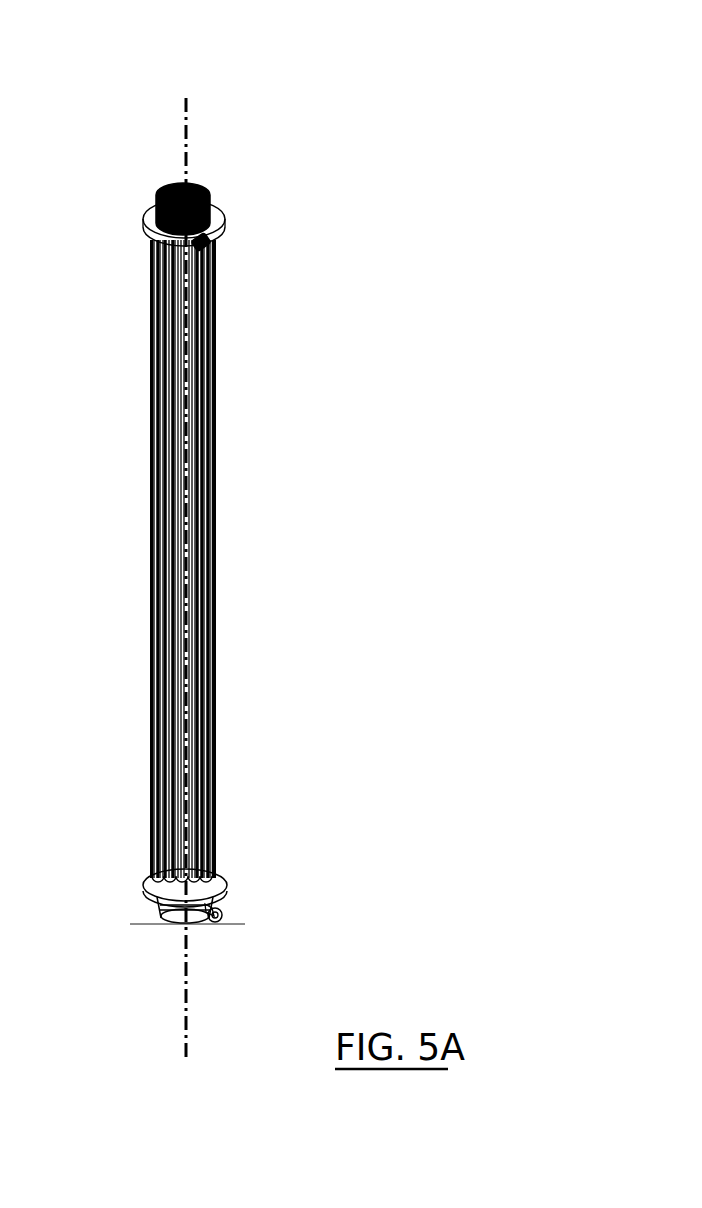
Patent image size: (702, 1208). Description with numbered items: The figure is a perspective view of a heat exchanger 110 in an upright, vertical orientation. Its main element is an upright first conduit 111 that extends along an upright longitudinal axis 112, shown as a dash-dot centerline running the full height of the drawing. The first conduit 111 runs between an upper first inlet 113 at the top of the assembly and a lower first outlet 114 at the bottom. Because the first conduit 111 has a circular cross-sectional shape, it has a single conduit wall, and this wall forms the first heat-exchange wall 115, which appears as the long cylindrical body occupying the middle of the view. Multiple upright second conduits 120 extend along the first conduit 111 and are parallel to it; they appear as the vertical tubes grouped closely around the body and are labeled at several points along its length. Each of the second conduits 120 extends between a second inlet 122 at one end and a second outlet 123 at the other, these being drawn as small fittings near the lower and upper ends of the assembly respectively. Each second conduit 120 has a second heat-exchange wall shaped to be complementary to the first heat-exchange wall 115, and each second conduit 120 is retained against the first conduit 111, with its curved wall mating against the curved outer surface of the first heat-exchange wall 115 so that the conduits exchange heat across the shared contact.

The heat exchanger 110 is at (362, 118).
The first conduit 111 is at (198, 186).
The longitudinal axis 112 is at (185, 128).
The first inlet 113 is at (155, 182).
The first outlet 114 is at (172, 928).
The first heat-exchange wall 115 is at (195, 808).
The second conduits 120 is at (160, 412).
The second inlet 122 is at (225, 915).
The second outlet 123 is at (212, 252).